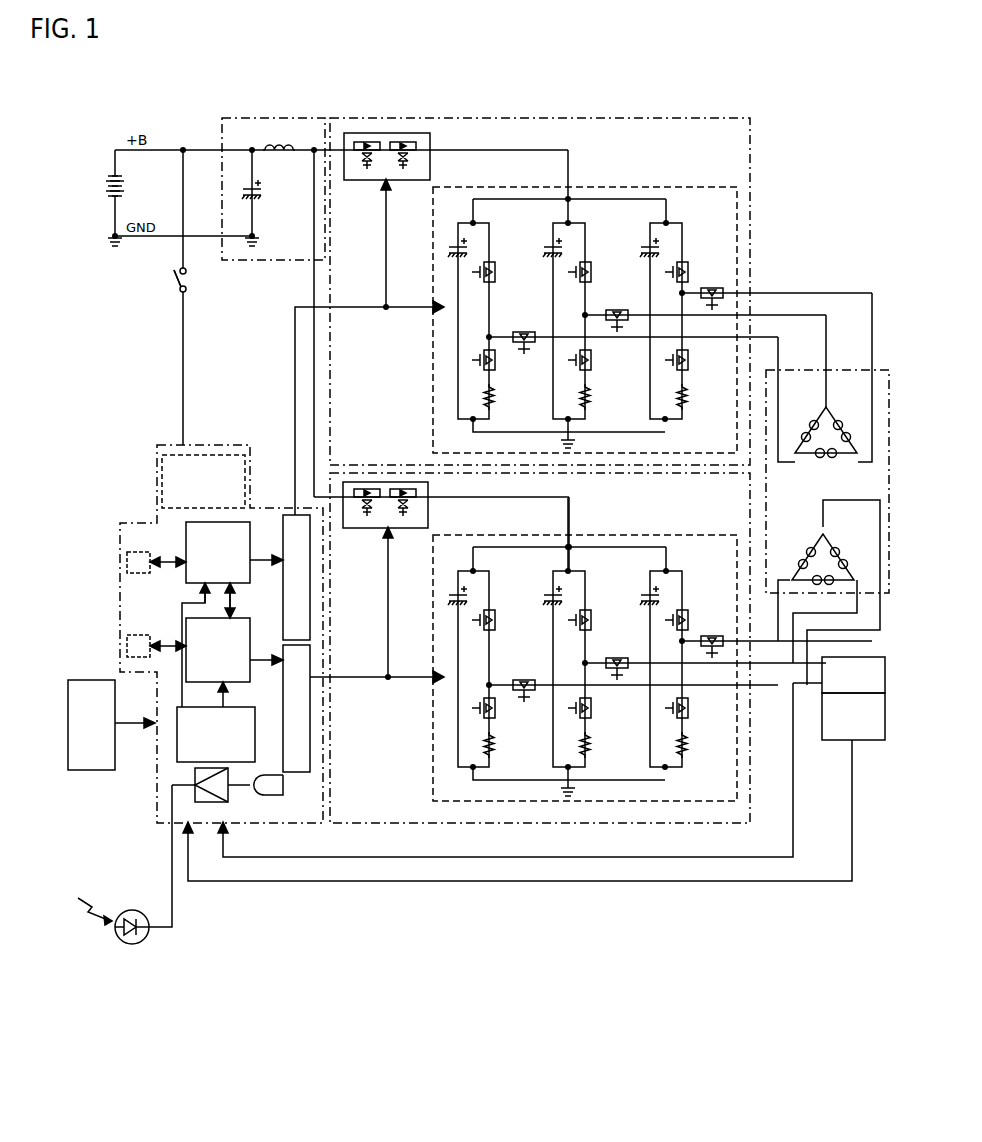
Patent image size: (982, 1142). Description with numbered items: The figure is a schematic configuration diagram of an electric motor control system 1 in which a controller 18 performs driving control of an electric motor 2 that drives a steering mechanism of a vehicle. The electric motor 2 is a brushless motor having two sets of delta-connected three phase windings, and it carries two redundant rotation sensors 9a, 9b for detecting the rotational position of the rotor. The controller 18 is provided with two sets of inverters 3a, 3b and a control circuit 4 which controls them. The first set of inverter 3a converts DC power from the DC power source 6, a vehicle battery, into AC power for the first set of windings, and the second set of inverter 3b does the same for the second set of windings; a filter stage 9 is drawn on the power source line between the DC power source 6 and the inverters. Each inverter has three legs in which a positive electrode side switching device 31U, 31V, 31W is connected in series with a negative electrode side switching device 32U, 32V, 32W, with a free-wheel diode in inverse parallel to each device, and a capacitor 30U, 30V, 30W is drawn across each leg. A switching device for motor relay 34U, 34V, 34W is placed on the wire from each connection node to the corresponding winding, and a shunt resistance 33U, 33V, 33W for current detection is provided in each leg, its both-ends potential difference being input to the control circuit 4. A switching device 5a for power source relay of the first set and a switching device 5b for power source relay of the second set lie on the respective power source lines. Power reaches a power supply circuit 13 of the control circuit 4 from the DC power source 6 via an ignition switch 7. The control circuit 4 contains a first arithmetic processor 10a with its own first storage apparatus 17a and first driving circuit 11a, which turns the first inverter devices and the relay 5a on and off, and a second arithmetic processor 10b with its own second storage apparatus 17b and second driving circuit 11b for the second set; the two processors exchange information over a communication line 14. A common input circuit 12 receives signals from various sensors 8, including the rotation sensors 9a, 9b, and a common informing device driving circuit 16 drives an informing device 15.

The electric motor control system 1 is at (795, 106).
The electric motor 2 is at (848, 370).
The first set of inverter 3a is at (737, 205).
The second set of inverter 3b is at (665, 805).
The control circuit 4 is at (157, 507).
The switching device for power source relay of first set 5a is at (373, 133).
The switching device for power source relay of second set 5b is at (368, 482).
The DC power source 6 is at (110, 175).
The ignition switch 7 is at (163, 282).
The sensors 8 is at (95, 770).
The noise filter 9 is at (238, 118).
The rotation sensor 9a is at (822, 683).
The rotation sensor 9b is at (842, 740).
The first arithmetic processor 10a is at (186, 535).
The second arithmetic processor 10b is at (186, 632).
The first driving circuit 11a is at (288, 515).
The second driving circuit 11b is at (305, 772).
The input circuit 12 is at (177, 745).
The power supply circuit 13 is at (170, 455).
The communication line 14 is at (195, 600).
The informing device 15 is at (120, 940).
The informing device driving circuit 16 is at (225, 803).
The first storage apparatus 17a is at (127, 562).
The second storage apparatus 17b is at (127, 646).
The controller 18 is at (667, 106).
The U-phase capacitor 30U is at (453, 245).
The V-phase capacitor 30V is at (549, 243).
The W-phase capacitor 30W is at (646, 243).
The positive electrode side switching device 31U is at (492, 265).
The positive electrode side switching device 31V is at (588, 265).
The positive electrode side switching device 31W is at (685, 262).
The negative electrode side switching device 32U is at (495, 368).
The negative electrode side switching device 32V is at (591, 366).
The negative electrode side switching device 32W is at (688, 366).
The shunt resistance 33U is at (493, 405).
The shunt resistance 33V is at (592, 405).
The shunt resistance 33W is at (688, 405).
The switching device for motor relay 34U is at (524, 331).
The switching device for motor relay 34V is at (617, 309).
The switching device for motor relay 34W is at (712, 287).